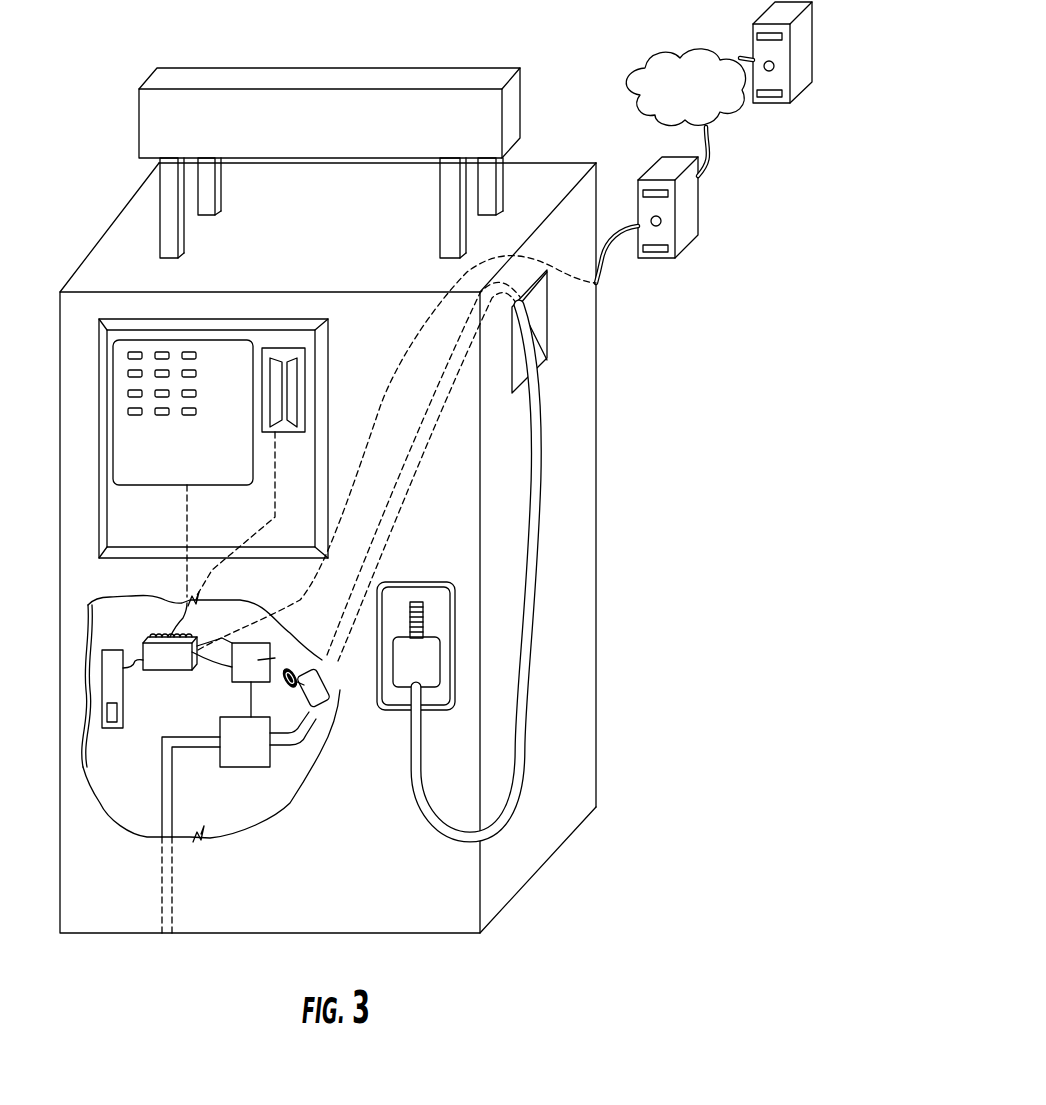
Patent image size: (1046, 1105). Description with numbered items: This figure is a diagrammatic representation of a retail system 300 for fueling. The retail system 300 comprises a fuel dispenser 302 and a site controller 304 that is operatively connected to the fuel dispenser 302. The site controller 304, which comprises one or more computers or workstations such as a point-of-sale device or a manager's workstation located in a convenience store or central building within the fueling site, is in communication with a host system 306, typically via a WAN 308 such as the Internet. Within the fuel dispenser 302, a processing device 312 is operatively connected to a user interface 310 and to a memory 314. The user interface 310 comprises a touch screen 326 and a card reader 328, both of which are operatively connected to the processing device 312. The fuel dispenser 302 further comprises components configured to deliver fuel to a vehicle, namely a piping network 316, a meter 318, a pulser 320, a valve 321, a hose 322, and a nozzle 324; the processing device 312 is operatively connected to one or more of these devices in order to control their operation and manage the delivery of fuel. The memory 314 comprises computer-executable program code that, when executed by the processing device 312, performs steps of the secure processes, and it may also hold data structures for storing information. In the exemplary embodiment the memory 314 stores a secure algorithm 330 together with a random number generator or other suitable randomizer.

The retail system 300 is at (648, 414).
The fuel dispenser 302 is at (58, 255).
The site controller 304 is at (688, 250).
The host system 306 is at (770, 103).
The WAN 308 is at (710, 95).
The user interface 310 is at (313, 536).
The processing device 312 is at (369, 463).
The memory 314 is at (125, 685).
The piping network 316 is at (351, 612).
The meter 318 is at (261, 755).
The pulser 320 is at (286, 670).
The valve 321 is at (328, 702).
The hose 322 is at (524, 653).
The nozzle 324 is at (440, 662).
The touch screen 326 is at (236, 465).
The card reader 328 is at (290, 351).
The secure algorithm 330 is at (118, 718).